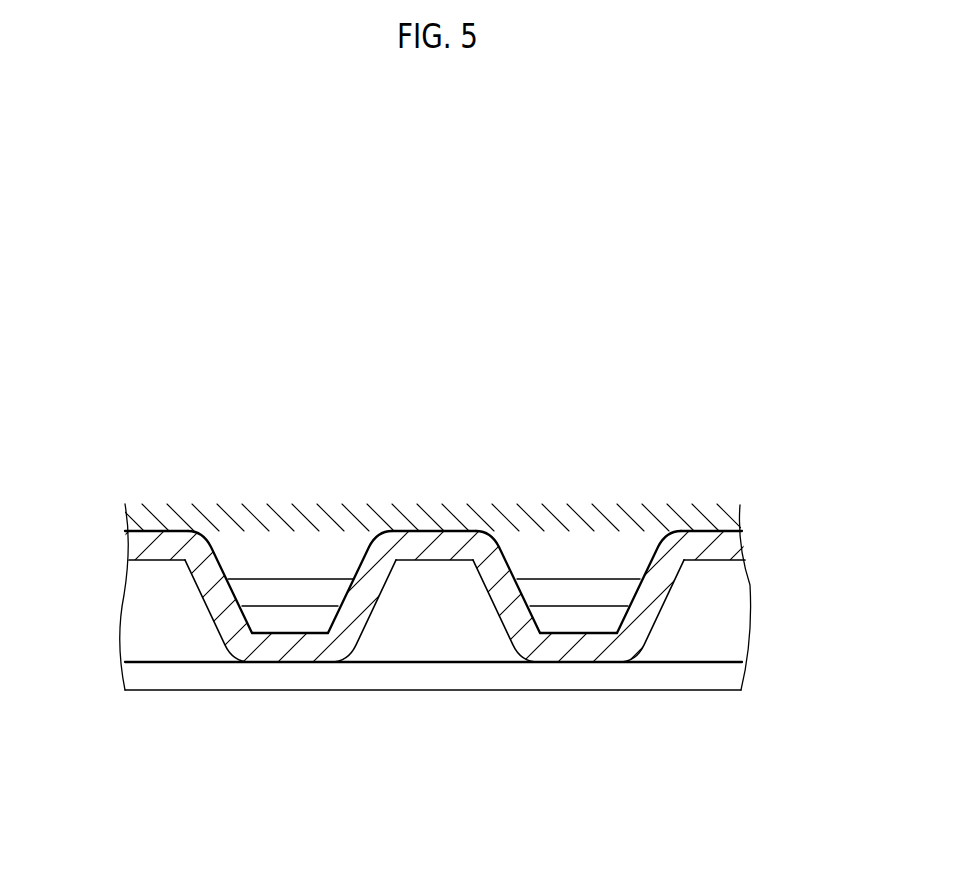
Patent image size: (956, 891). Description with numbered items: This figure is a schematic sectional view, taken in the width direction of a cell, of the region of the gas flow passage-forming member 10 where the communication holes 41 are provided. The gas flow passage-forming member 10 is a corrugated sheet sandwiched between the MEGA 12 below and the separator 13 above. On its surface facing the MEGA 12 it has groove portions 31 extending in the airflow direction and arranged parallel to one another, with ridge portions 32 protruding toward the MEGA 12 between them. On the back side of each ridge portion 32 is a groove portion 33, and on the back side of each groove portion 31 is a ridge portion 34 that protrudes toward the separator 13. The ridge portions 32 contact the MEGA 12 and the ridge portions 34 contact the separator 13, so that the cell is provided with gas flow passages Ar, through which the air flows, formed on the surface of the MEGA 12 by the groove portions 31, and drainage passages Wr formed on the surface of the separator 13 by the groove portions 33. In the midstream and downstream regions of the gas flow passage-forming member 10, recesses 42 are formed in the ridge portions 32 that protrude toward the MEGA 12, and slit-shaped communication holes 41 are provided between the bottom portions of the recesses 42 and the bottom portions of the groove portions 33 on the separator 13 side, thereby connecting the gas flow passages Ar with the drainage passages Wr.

The gas flow passage-forming member 10 is at (147, 521).
The MEGA 12 is at (730, 675).
The separator 13 is at (725, 518).
The groove portion 31 is at (465, 600).
The ridge portion 32 is at (286, 653).
The groove portion 33 is at (233, 545).
The ridge portion 34 is at (177, 536).
The communication hole 41 is at (297, 618).
The recess 42 is at (322, 605).
The drainage passage Wr is at (286, 542).
The gas flow passage Ar is at (135, 635).